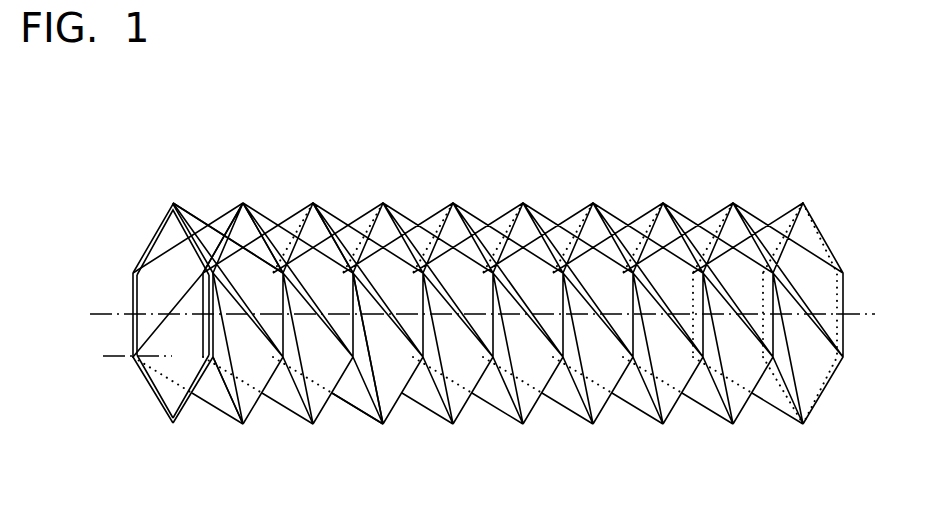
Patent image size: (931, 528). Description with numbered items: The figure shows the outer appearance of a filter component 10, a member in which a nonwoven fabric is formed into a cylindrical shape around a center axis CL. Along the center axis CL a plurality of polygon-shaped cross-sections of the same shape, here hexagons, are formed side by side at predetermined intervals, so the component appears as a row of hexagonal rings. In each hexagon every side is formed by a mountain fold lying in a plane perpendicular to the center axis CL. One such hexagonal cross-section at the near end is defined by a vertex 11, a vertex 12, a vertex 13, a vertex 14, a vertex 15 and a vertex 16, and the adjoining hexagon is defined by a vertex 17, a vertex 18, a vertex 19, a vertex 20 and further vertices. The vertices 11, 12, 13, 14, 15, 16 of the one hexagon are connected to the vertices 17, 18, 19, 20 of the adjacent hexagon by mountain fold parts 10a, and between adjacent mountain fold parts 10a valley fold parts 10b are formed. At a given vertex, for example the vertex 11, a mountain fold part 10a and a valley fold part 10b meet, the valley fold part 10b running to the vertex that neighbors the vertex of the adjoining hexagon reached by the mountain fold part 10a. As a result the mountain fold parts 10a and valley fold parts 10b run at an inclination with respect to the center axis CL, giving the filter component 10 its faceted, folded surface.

The filter component 10 is at (548, 228).
The mountain fold part 10a is at (198, 215).
The valley fold part 10b is at (225, 222).
The vertex 11 is at (173, 202).
The vertex 12 is at (229, 239).
The vertex 13 is at (205, 412).
The vertex 14 is at (173, 424).
The vertex 15 is at (133, 357).
The vertex 16 is at (132, 272).
The vertex 17 is at (243, 202).
The vertex 18 is at (313, 203).
The vertex 19 is at (326, 396).
The vertex 20 is at (242, 425).
The center axis CL is at (92, 313).